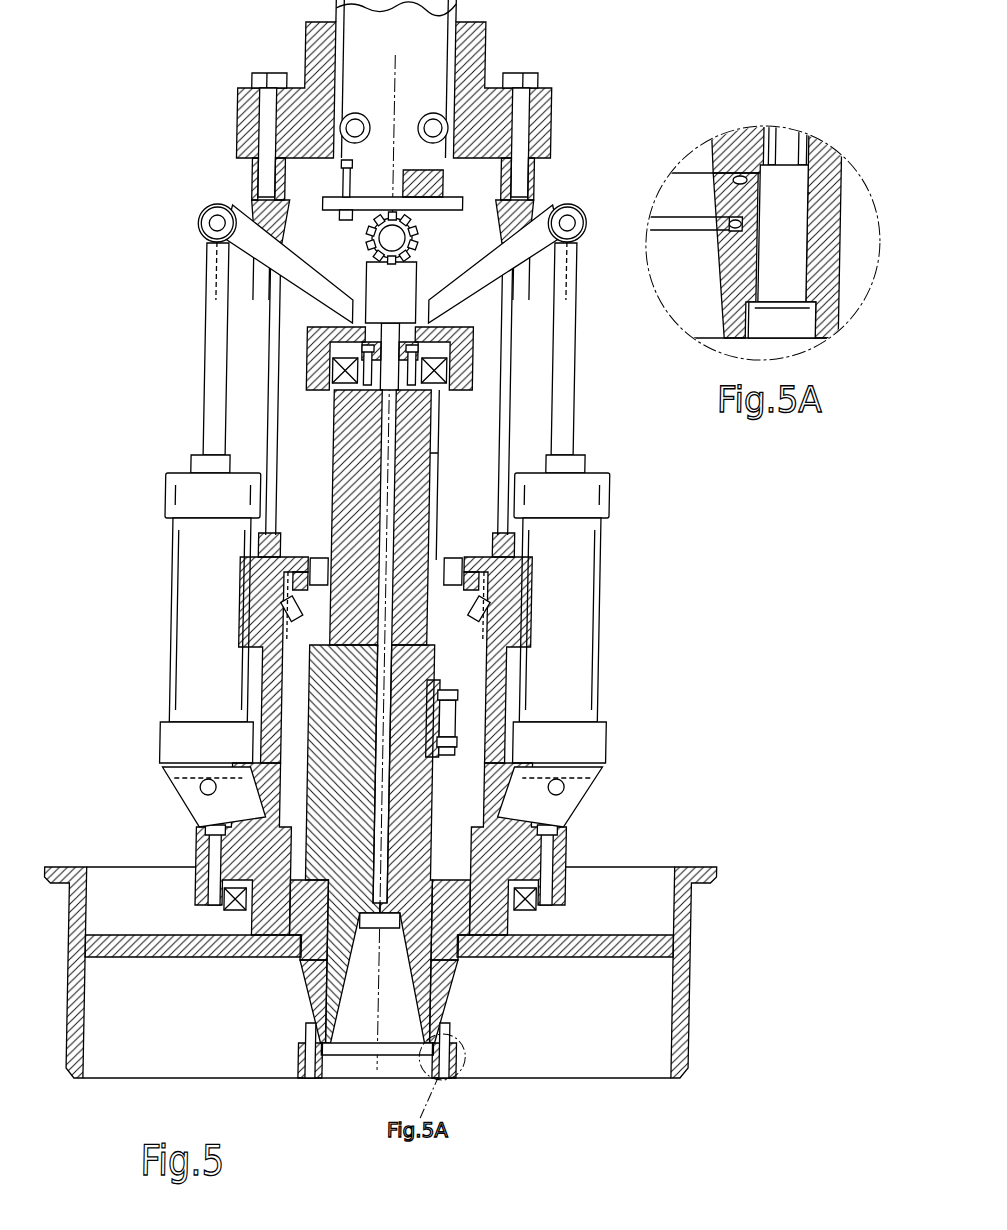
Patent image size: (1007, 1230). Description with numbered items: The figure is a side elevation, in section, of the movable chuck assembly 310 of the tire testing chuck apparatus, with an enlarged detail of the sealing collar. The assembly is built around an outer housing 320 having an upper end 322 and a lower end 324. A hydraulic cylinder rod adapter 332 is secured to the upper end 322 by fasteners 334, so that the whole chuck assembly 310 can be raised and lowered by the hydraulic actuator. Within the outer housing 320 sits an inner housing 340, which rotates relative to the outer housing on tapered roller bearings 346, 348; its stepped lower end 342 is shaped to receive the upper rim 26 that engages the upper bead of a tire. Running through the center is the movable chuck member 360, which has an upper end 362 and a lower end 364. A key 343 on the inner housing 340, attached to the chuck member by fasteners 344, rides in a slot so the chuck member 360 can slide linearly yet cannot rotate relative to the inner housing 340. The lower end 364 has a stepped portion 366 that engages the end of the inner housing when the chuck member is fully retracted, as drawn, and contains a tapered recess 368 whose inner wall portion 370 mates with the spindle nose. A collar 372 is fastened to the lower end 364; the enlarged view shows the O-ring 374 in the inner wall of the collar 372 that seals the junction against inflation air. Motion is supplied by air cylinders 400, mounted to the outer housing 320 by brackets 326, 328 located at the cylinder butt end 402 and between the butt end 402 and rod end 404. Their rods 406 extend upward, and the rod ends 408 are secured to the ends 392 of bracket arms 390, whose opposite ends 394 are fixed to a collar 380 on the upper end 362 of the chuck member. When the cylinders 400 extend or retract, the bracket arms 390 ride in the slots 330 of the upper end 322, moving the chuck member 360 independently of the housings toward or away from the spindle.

In FIG. 5, the upper rim 26 is at (702, 983).
In FIG. 5, the movable chuck assembly 310 is at (159, 118).
In FIG. 5, the outer housing 320 is at (283, 702).
In FIG. 5, the upper end 322 is at (252, 197).
In FIG. 5, the lower end 324 is at (226, 828).
In FIG. 5, the bracket 326 is at (208, 800).
In FIG. 5, the bracket 328 is at (573, 810).
In FIG. 5, the slots 330 is at (500, 397).
In FIG. 5, the hydraulic cylinder rod adapter 332 is at (483, 80).
In FIG. 5, the fasteners 334 is at (257, 78).
In FIG. 5, the inner housing 340 is at (327, 715).
In FIG. 5, the stepped lower end 342 is at (308, 945).
In FIG. 5, the key 343 is at (450, 718).
In FIG. 5, the fasteners 344 is at (503, 693).
In FIG. 5, the tapered roller bearing 346 is at (477, 590).
In FIG. 5, the tapered roller bearing 348 is at (568, 876).
In FIG. 5, the movable chuck member 360 is at (416, 430).
In FIG. 5, the upper end 362 is at (358, 415).
In FIG. 5, the lower end 364 is at (325, 997).
In FIG. 5, the stepped portion 366 is at (457, 983).
In FIG. 5, the tapered recess 368 is at (378, 1062).
In FIG. 5, the inner wall portion 370 is at (364, 997).
In FIG. 5, the collar 372 is at (466, 1060).
In FIG. 5A, the collar 372 is at (838, 272).
In FIG. 5A, the O-ring 374 is at (730, 228).
In FIG. 5, the collar 380 is at (307, 345).
In FIG. 5, the bracket arms 390 is at (291, 278).
In FIG. 5, the ends 392 is at (550, 215).
In FIG. 5, the ends 394 is at (437, 305).
In FIG. 5, the air cylinders 400 is at (176, 568).
In FIG. 5, the butt end 402 is at (183, 773).
In FIG. 5, the rod end 404 is at (196, 500).
In FIG. 5, the rods 406 is at (213, 318).
In FIG. 5, the ends 408 is at (196, 230).